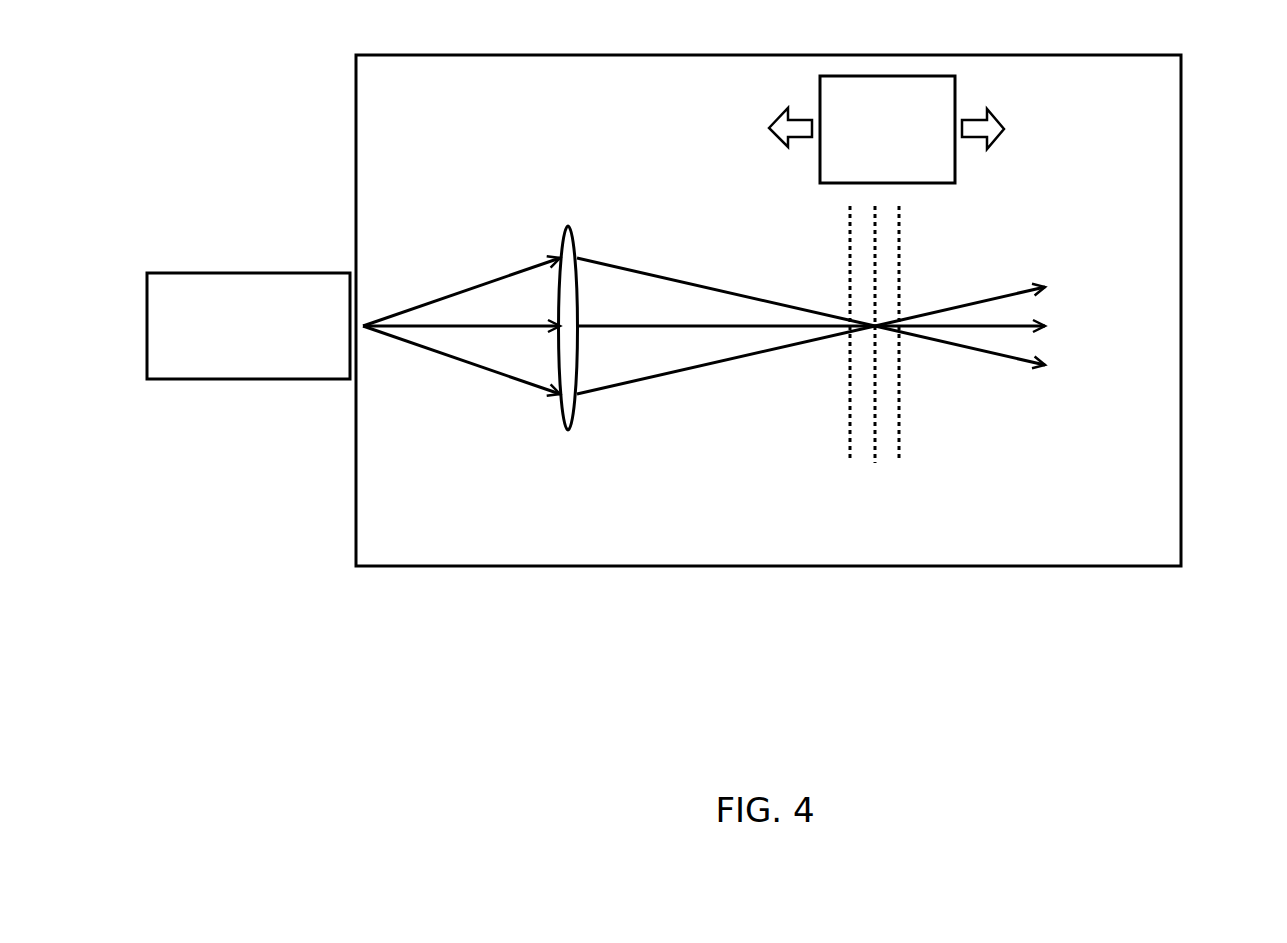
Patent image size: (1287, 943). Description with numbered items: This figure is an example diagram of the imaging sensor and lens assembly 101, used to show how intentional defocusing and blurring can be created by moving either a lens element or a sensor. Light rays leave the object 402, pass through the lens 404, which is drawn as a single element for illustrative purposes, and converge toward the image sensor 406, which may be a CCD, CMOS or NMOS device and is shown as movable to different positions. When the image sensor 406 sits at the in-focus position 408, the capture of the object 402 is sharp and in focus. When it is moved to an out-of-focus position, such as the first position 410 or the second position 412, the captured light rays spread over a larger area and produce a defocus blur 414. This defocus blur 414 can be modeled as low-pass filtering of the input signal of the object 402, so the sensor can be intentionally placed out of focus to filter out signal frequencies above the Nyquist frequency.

The imaging sensor and lens assembly 101 is at (394, 104).
The object 402 is at (227, 351).
The lens 404 is at (572, 250).
The image sensor 406 is at (866, 170).
The in-focus position 408 is at (879, 468).
The first position 410 is at (830, 463).
The second position 412 is at (907, 435).
The defocus blur 414 is at (1025, 275).